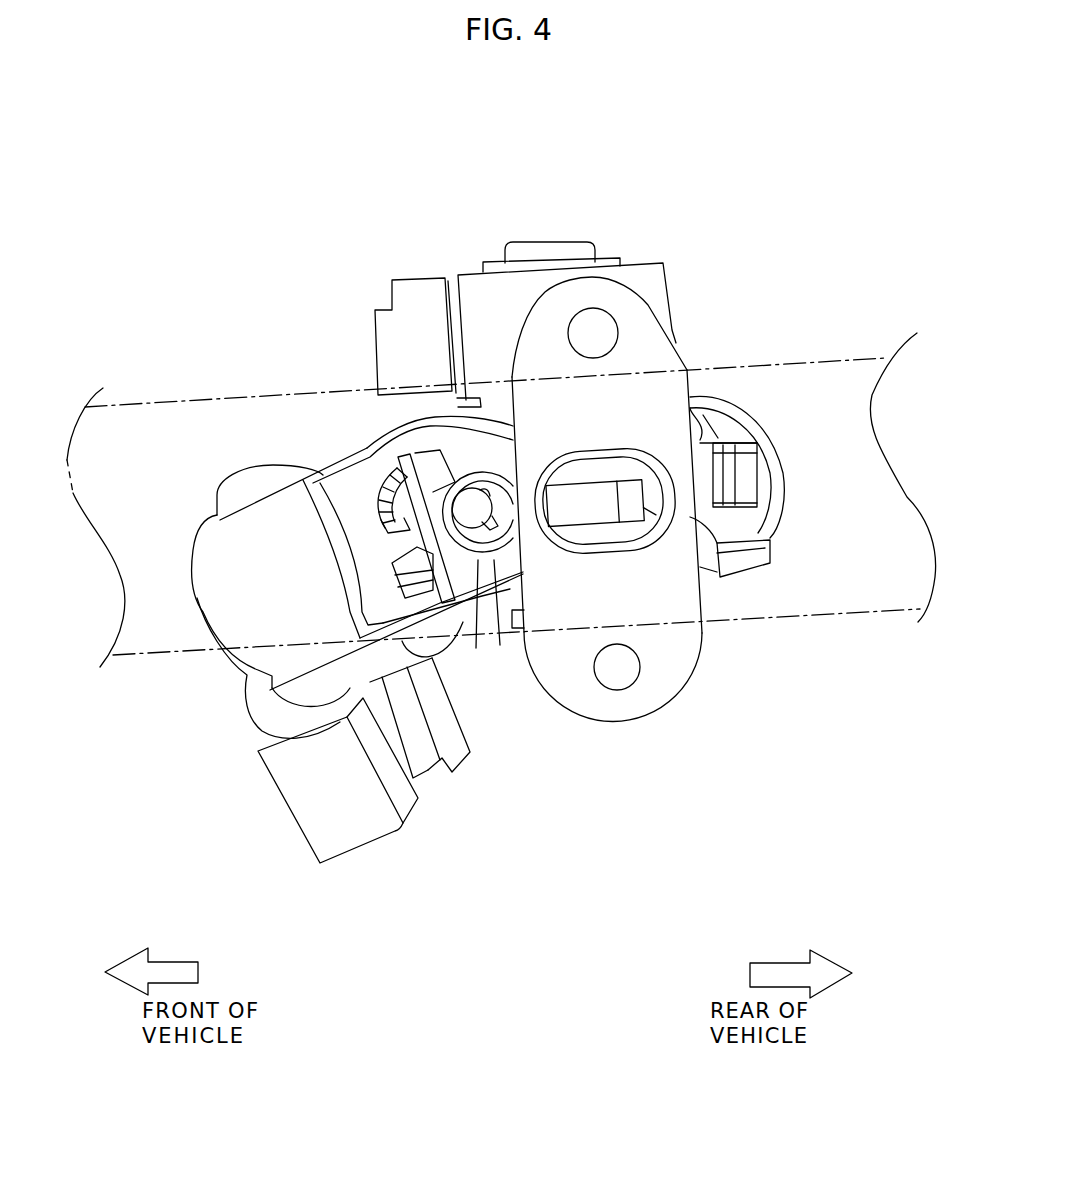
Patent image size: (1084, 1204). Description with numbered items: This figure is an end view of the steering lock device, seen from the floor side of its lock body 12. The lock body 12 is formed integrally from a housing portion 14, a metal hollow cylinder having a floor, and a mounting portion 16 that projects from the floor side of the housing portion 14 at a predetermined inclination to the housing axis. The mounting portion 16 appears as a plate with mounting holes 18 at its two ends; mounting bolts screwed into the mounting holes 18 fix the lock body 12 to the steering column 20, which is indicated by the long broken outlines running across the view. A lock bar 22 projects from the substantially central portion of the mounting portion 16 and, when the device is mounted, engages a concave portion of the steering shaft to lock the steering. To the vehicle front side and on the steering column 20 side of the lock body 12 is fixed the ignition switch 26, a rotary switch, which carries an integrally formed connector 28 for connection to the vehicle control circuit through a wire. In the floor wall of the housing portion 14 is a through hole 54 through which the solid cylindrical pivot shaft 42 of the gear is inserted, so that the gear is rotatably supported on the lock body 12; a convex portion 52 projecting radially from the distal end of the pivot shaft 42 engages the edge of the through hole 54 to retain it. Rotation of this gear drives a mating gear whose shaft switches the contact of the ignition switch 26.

The lock body 12 is at (733, 391).
The housing portion 14 is at (767, 420).
The mounting portion 16 is at (683, 683).
The mounting holes 18 is at (596, 328).
The steering column 20 is at (160, 400).
The lock bar 22 is at (572, 508).
The ignition switch 26 is at (208, 550).
The connector 28 is at (323, 838).
The pivot shaft 42 is at (466, 520).
The convex portion 52 is at (498, 616).
The through hole 54 is at (385, 497).